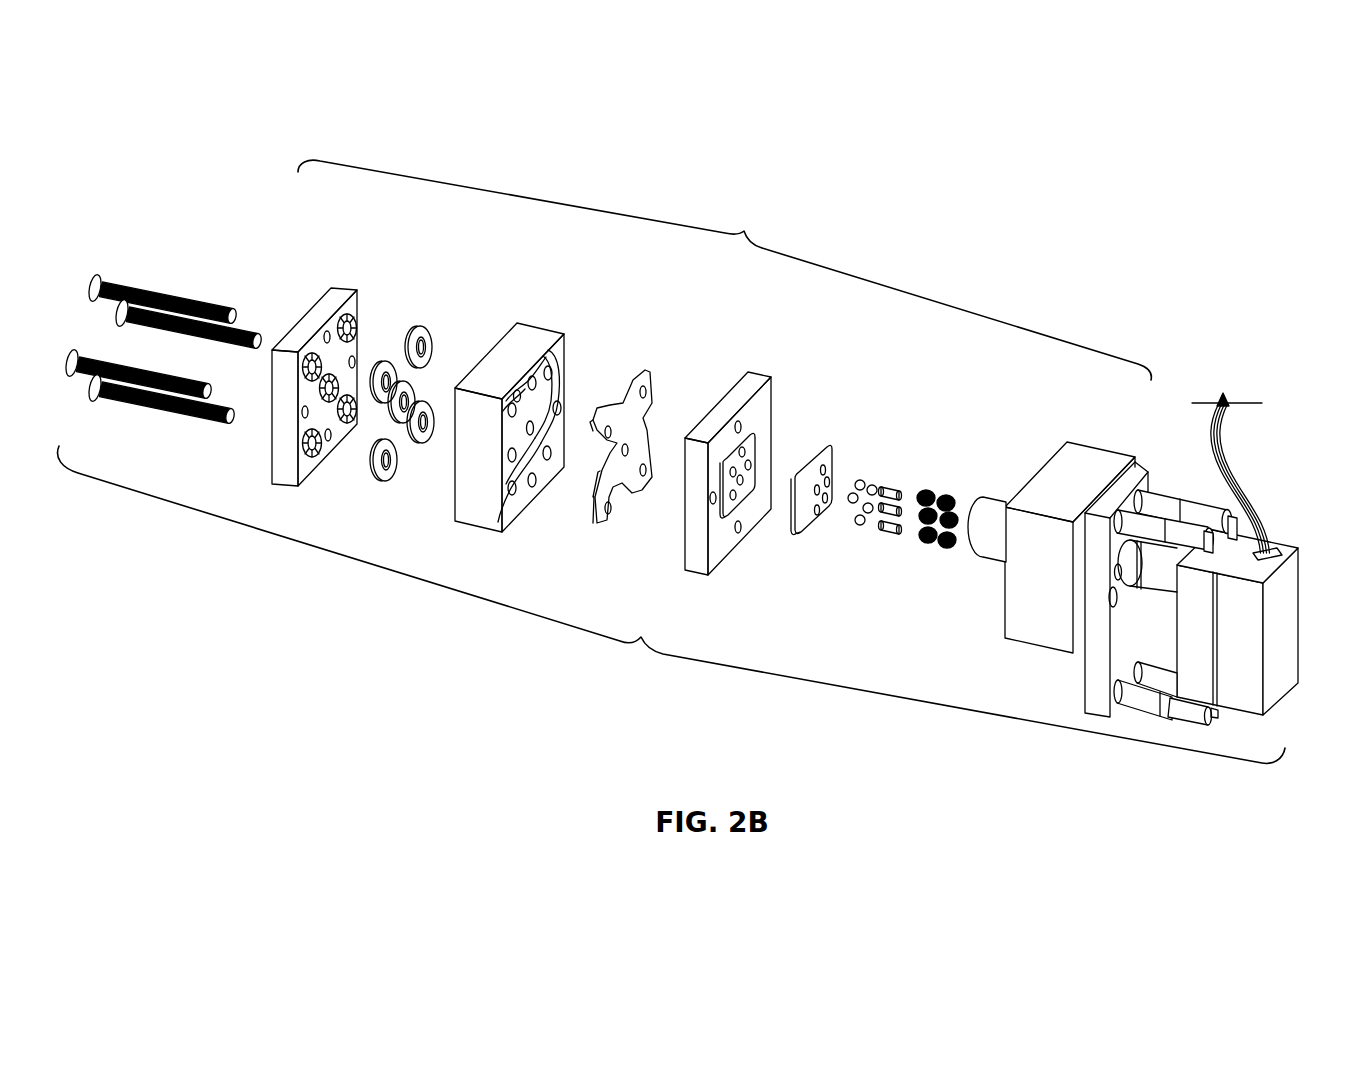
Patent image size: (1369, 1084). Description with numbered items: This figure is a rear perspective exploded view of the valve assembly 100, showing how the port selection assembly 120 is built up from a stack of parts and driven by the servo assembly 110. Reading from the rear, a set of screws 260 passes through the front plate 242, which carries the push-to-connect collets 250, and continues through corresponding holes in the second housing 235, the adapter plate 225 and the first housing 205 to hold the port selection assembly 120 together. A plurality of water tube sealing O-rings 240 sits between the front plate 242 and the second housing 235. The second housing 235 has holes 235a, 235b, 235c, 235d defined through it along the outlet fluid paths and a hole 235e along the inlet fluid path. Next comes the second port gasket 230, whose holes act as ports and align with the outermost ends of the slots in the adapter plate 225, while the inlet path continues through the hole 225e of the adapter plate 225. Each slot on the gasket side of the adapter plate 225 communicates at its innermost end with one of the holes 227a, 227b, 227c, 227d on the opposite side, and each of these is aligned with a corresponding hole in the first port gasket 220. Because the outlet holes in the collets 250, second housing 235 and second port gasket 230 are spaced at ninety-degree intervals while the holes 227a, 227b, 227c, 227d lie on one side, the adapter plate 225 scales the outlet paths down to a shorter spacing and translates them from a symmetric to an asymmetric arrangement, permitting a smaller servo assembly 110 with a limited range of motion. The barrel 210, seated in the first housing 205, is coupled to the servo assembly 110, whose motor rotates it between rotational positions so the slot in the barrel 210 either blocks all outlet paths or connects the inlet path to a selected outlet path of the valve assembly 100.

The valve assembly 100 is at (671, 604).
The servo assembly 110 is at (1277, 460).
The port selection assembly 120 is at (724, 270).
The first housing 205 is at (1057, 642).
The barrel 210 is at (978, 561).
The first port gasket 220 is at (798, 537).
The adapter plate 225 is at (728, 548).
The hole 225e is at (732, 475).
The hole 227a is at (750, 463).
The hole 227b is at (748, 489).
The hole 227c is at (744, 451).
The hole 227d is at (733, 497).
The second port gasket 230 is at (597, 530).
The second housing 235 is at (550, 333).
The hole 235a is at (550, 367).
The hole 235b is at (510, 503).
The hole 235c is at (517, 395).
The hole 235d is at (543, 463).
The hole 235e is at (530, 428).
The water tube sealing O-rings 240 is at (406, 320).
The front plate 242 is at (347, 288).
The push-to-connect collets 250 is at (298, 348).
The screws 260 is at (181, 276).